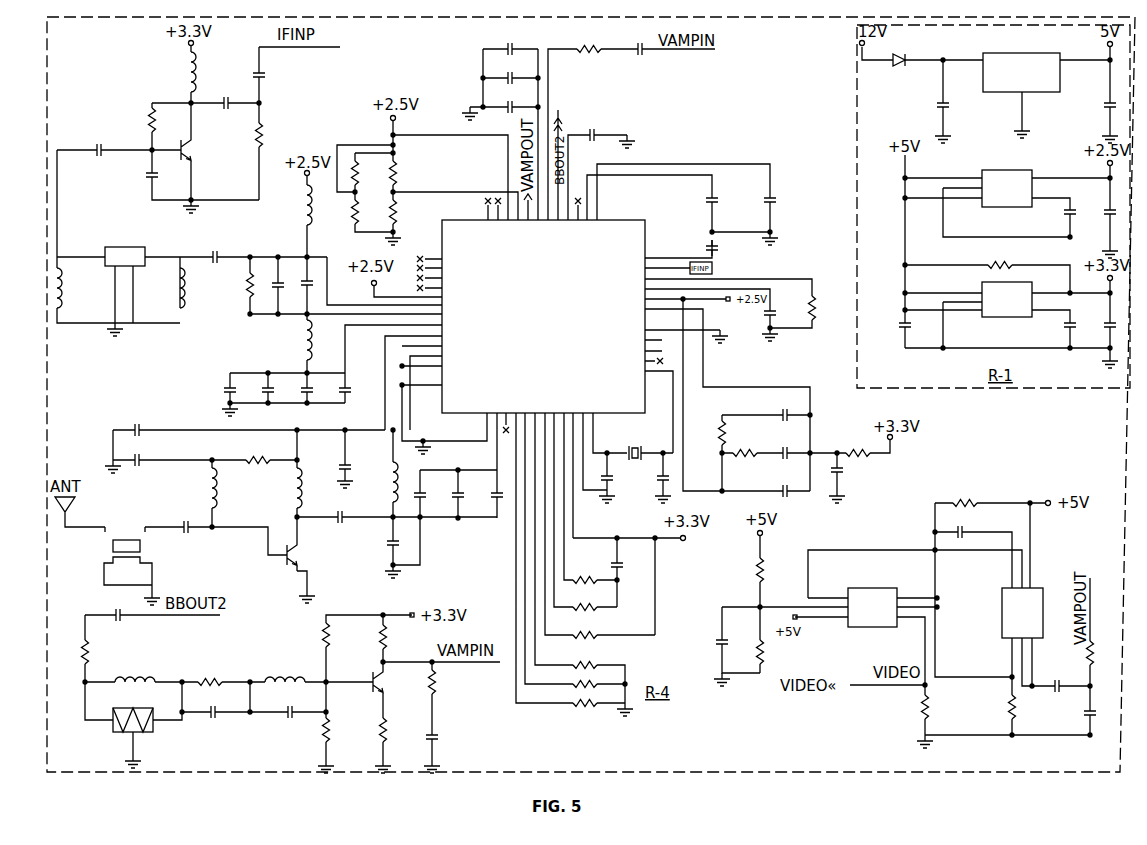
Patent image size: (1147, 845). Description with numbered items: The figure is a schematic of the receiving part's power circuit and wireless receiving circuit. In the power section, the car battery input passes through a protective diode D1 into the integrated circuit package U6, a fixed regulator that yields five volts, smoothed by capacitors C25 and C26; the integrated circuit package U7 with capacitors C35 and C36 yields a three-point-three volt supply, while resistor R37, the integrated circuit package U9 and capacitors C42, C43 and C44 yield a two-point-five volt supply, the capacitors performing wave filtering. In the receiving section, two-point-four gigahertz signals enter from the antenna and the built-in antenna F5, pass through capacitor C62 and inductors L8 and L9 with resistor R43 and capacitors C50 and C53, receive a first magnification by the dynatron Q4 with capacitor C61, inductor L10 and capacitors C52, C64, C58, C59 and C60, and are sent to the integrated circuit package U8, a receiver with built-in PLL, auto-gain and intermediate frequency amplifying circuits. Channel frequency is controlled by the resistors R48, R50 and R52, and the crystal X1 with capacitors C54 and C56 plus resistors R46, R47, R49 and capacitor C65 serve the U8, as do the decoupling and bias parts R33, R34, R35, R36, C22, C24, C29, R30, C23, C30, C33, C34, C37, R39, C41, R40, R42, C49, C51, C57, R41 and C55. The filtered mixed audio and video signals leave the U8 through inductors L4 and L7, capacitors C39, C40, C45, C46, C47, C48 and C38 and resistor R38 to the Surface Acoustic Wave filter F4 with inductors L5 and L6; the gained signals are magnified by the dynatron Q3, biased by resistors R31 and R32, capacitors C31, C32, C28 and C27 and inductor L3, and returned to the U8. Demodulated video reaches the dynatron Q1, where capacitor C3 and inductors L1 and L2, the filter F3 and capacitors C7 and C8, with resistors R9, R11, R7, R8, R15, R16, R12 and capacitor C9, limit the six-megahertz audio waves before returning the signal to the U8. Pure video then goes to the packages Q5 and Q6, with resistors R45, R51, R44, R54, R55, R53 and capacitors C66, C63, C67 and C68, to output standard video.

The inductor L3 is at (203, 72).
The dynatron Q3 is at (178, 143).
The resistor R31 is at (136, 120).
The resistor R32 is at (277, 135).
The capacitor C31 is at (99, 141).
The capacitor C28 is at (223, 95).
The capacitor C27 is at (276, 76).
The capacitor C32 is at (167, 176).
The SAW filter F4 is at (110, 237).
The inductor L5 is at (69, 288).
The inductor L6 is at (192, 288).
The capacitor C38 is at (215, 247).
The resistor R38 is at (234, 285).
The capacitor C39 is at (292, 280).
The capacitor C40 is at (323, 285).
The inductor L4 is at (320, 208).
The inductor L7 is at (320, 340).
The capacitor C45 is at (245, 391).
The capacitor C46 is at (283, 391).
The capacitor C47 is at (322, 391).
The capacitor C48 is at (360, 391).
The resistor R33 is at (370, 173).
The resistor R34 is at (409, 173).
The resistor R35 is at (370, 212).
The resistor R36 is at (410, 212).
The capacitor C22 is at (507, 40).
The capacitor C24 is at (509, 70).
The capacitor C29 is at (509, 99).
The resistor R30 is at (587, 39).
The capacitor C23 is at (640, 40).
The capacitor C30 is at (593, 126).
The capacitor C33 is at (728, 201).
The capacitor C34 is at (786, 201).
The capacitor C37 is at (728, 249).
The integrated circuit package U8 is at (548, 313).
The resistor R39 is at (796, 305).
The capacitor C41 is at (754, 316).
The resistor R40 is at (708, 433).
The resistor R42 is at (745, 444).
The capacitor C49 is at (785, 407).
The capacitor C51 is at (785, 445).
The capacitor C57 is at (785, 482).
The resistor R41 is at (858, 442).
The capacitor C55 is at (853, 472).
The crystal X1 is at (633, 441).
The capacitor C54 is at (621, 484).
The capacitor C56 is at (653, 476).
The capacitor C65 is at (632, 566).
The resistor R46 is at (581, 572).
The resistor R47 is at (574, 600).
The resistor R49 is at (574, 628).
The resistor R52 is at (571, 658).
The resistor R50 is at (571, 677).
The resistor R48 is at (571, 696).
The capacitor C50 is at (135, 422).
The capacitor C53 is at (135, 452).
The resistor R43 is at (259, 451).
The inductor L8 is at (225, 488).
The inductor L9 is at (310, 488).
The built-in antenna F5 is at (132, 551).
The capacitor C62 is at (185, 517).
The dynatron Q4 is at (305, 555).
The capacitor C61 is at (341, 509).
The capacitor C52 is at (360, 468).
The inductor L10 is at (409, 482).
The capacitor C64 is at (379, 540).
The capacitor C58 is at (435, 496).
The capacitor C59 is at (473, 496).
The capacitor C60 is at (511, 489).
The capacitor C3 is at (118, 624).
The resistor R9 is at (98, 652).
The inductor L1 is at (135, 671).
The resistor R11 is at (211, 673).
The inductor L2 is at (285, 671).
The inductor F3 is at (132, 708).
The inductor C7 is at (213, 721).
The inductor C8 is at (290, 721).
The resistor R7 is at (338, 635).
The resistor R8 is at (395, 637).
The resistor R15 is at (343, 730).
The resistor R16 is at (400, 730).
The dynatron Q1 is at (393, 682).
The resistor R12 is at (450, 682).
The capacitor C9 is at (443, 739).
The diode D1 is at (902, 51).
The integrated circuit package U6 is at (1029, 69).
The capacitor C25 is at (959, 106).
The capacitor C26 is at (1094, 106).
The integrated circuit package U7 is at (1030, 190).
The capacitor C35 is at (1056, 210).
The capacitor C36 is at (1098, 204).
The resistor R37 is at (1000, 256).
The integrated circuit package U9 is at (1030, 303).
The capacitor C42 is at (920, 326).
The capacitor C43 is at (1056, 323).
The capacitor C44 is at (1098, 317).
The resistor R45 is at (778, 570).
The resistor R51 is at (778, 652).
The capacitor C66 is at (736, 642).
The integrated circuit package Q5 is at (874, 609).
The resistor R54 is at (943, 707).
The resistor R44 is at (965, 494).
The capacitor C63 is at (960, 524).
The integrated circuit package Q6 is at (991, 613).
The resistor R55 is at (1030, 707).
The resistor R53 is at (1075, 651).
The capacitor C67 is at (1053, 678).
The capacitor C68 is at (1076, 714).